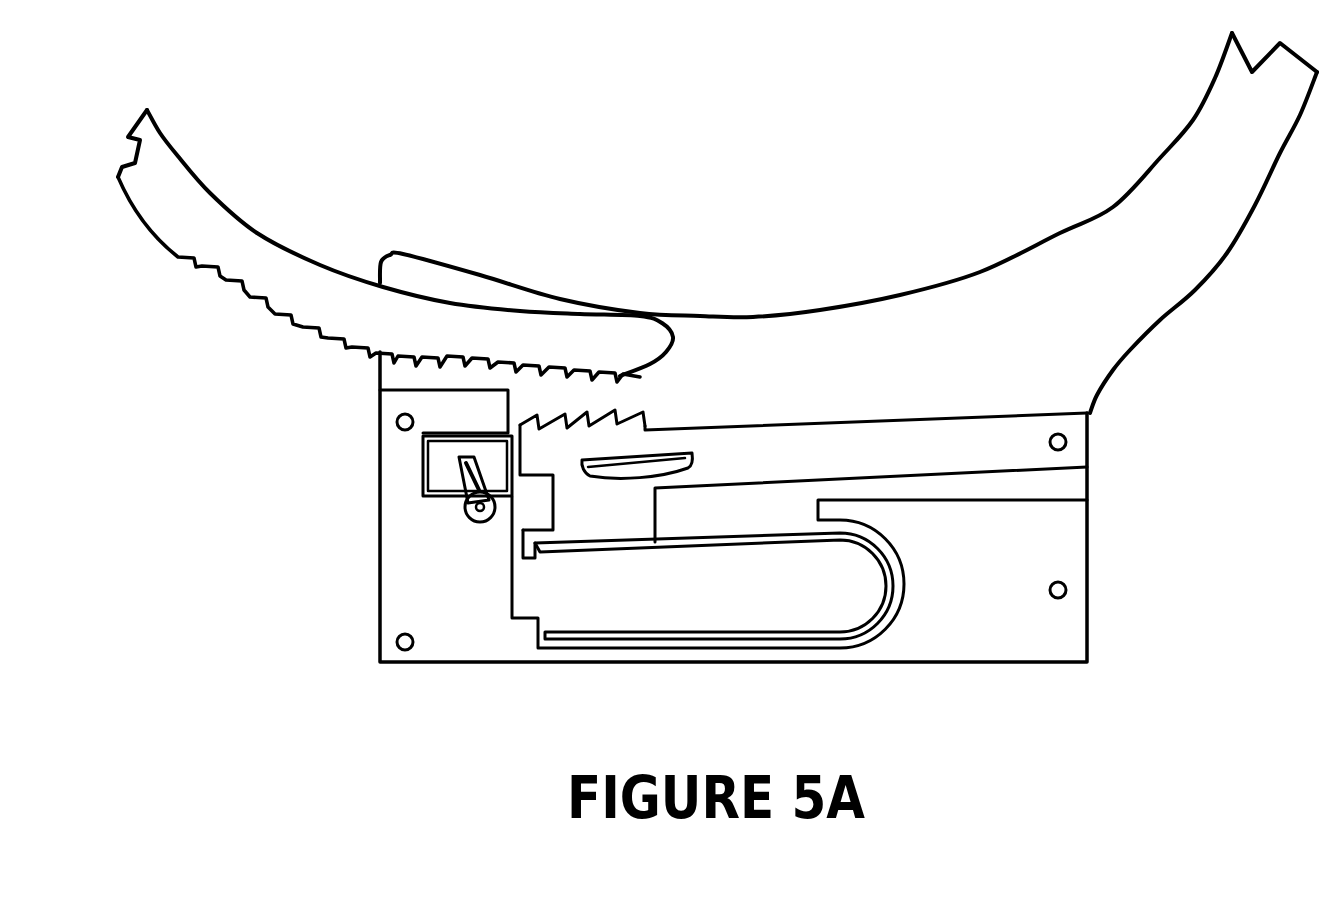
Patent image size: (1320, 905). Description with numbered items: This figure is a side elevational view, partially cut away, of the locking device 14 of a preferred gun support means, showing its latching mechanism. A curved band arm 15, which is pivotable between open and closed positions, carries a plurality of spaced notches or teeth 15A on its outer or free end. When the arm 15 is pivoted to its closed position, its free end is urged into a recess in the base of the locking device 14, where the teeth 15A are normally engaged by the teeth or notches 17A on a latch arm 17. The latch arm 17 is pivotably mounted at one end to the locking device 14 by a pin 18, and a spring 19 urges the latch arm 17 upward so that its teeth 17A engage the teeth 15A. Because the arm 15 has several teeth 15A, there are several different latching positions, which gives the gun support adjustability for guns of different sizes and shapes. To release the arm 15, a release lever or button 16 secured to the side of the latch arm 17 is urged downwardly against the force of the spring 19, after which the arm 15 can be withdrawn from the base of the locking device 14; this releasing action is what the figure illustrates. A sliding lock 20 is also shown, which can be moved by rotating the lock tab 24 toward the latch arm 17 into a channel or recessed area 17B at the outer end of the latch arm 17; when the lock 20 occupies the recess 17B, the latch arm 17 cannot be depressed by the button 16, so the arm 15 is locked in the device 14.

The locking device 14 is at (1153, 320).
The curved band arm 15 is at (255, 236).
The teeth 15A is at (350, 350).
The release lever 16 is at (672, 452).
The latch arm 17 is at (853, 420).
The teeth 17A is at (615, 410).
The channel 17B is at (520, 528).
The pin 18 is at (1067, 442).
The spring 19 is at (732, 545).
The sliding lock 20 is at (448, 475).
The lock tab 24 is at (465, 492).